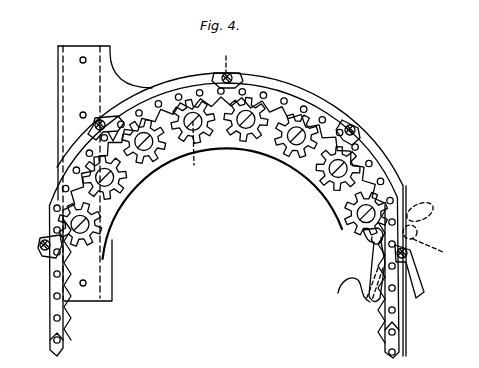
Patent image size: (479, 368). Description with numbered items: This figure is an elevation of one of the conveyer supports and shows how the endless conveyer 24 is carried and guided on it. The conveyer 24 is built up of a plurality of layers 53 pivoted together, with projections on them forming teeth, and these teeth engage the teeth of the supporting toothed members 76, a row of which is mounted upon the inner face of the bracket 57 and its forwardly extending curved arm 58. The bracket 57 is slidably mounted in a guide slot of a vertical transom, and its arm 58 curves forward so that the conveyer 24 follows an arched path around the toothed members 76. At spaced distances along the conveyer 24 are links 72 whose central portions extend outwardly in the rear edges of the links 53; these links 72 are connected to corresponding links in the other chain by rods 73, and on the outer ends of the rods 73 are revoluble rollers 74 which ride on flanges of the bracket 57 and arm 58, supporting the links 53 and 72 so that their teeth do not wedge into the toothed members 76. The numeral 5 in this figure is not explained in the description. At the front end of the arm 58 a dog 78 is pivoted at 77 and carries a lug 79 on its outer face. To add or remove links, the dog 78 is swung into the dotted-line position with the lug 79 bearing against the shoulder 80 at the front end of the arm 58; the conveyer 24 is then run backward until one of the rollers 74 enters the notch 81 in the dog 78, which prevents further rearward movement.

The gear spindle 5 is at (206, 110).
The conveyer 24 is at (63, 319).
The layers 53 is at (268, 95).
The bracket 57 is at (110, 56).
The curved arm 58 is at (391, 167).
The links 72 is at (218, 78).
The rods 73 is at (97, 125).
The rollers 74 is at (98, 120).
The supporting toothed members 76 is at (241, 141).
The pivot 77 is at (366, 249).
The dog 78 is at (372, 254).
The lug 79 is at (380, 284).
The shoulder 80 is at (403, 217).
The notch 81 is at (340, 294).